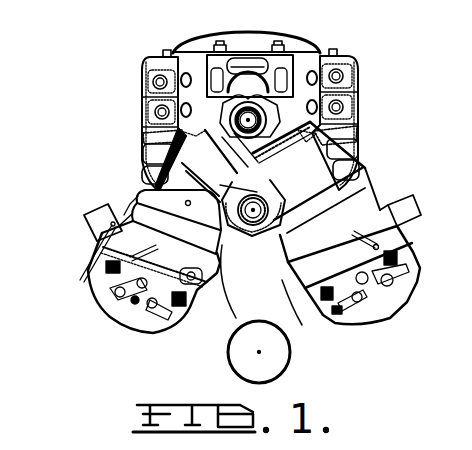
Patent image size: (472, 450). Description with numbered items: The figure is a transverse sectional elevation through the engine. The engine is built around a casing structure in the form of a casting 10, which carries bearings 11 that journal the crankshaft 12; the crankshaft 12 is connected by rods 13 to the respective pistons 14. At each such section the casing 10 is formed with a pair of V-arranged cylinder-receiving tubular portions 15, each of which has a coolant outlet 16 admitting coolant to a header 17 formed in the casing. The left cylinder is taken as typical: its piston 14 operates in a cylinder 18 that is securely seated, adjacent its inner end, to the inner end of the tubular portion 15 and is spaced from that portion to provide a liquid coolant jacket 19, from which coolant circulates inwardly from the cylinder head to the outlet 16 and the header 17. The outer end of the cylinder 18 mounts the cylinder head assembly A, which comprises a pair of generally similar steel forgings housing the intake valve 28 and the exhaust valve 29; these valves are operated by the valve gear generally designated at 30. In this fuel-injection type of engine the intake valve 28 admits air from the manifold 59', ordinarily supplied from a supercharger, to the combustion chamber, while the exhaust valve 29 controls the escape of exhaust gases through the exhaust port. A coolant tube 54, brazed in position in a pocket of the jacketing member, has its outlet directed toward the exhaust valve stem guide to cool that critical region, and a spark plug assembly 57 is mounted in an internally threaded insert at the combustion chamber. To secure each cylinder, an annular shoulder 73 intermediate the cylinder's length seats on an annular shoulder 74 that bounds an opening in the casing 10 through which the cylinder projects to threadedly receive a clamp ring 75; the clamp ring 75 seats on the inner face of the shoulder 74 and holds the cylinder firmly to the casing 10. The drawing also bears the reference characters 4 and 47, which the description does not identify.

The casting 10 is at (366, 77).
The bearings 11 is at (277, 64).
The crankshaft 12 is at (235, 87).
The rods 13 is at (228, 104).
The pistons 14 is at (218, 161).
The cylinder-receiving tubular portions 15 is at (141, 172).
The coolant outlet 16 is at (142, 127).
The header 17 is at (143, 150).
The cylinder 18 is at (226, 104).
The liquid coolant jacket 19 is at (237, 230).
The intake valve 28 is at (300, 223).
The exhaust valve 29 is at (96, 233).
The valve gear 30 is at (123, 313).
The push rod 47 is at (98, 266).
The cylinder 4 is at (137, 199).
The coolant tube 54 is at (158, 313).
The spark plug assembly 57 is at (378, 200).
The manifold 59' is at (284, 352).
The annular shoulder 73 is at (176, 208).
The annular shoulder 74 is at (142, 110).
The clamp ring 75 is at (362, 117).
The cylinder head assembly A is at (117, 198).